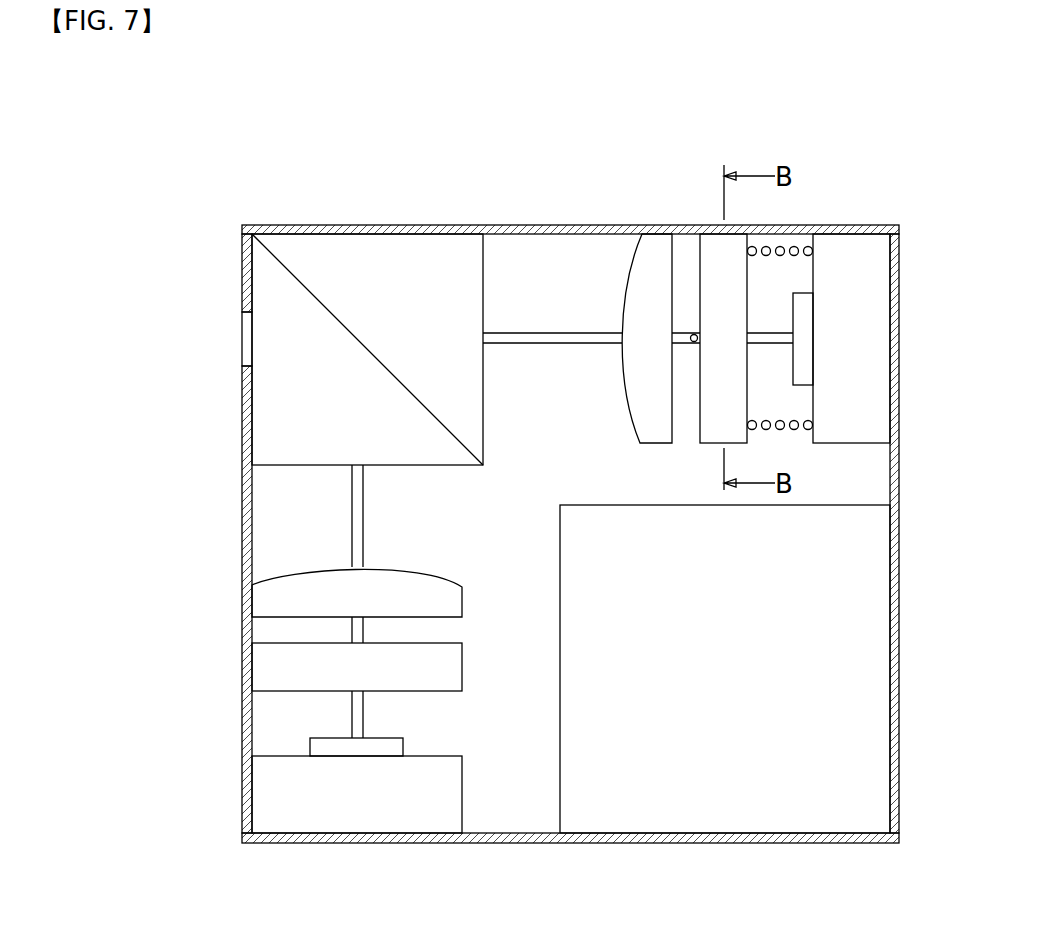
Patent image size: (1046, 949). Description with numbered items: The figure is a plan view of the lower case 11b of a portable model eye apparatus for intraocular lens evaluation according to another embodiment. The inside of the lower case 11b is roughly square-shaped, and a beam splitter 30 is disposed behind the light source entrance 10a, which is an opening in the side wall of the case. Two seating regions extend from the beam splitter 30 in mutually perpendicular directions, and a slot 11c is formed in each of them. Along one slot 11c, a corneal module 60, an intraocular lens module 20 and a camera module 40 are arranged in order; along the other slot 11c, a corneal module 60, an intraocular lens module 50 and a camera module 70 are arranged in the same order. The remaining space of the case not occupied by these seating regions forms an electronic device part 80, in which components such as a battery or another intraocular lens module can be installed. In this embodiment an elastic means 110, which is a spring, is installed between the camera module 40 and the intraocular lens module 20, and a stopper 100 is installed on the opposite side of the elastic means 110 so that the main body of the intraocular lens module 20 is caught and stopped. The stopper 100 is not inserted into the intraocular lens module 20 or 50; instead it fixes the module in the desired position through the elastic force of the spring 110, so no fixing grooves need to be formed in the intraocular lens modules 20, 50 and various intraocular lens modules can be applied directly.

The light source entrance 10a is at (248, 341).
The lower case 11b is at (508, 231).
The slot 11c is at (570, 340).
The intraocular lens module 20 is at (716, 245).
The beam splitter 30 is at (393, 247).
The camera module 40 is at (860, 248).
The intraocular lens module 50 is at (262, 670).
The corneal module 60 is at (640, 275).
The camera module 70 is at (262, 795).
The electronic device part 80 is at (863, 667).
The stopper 100 is at (694, 333).
The elastic means 110 is at (795, 247).